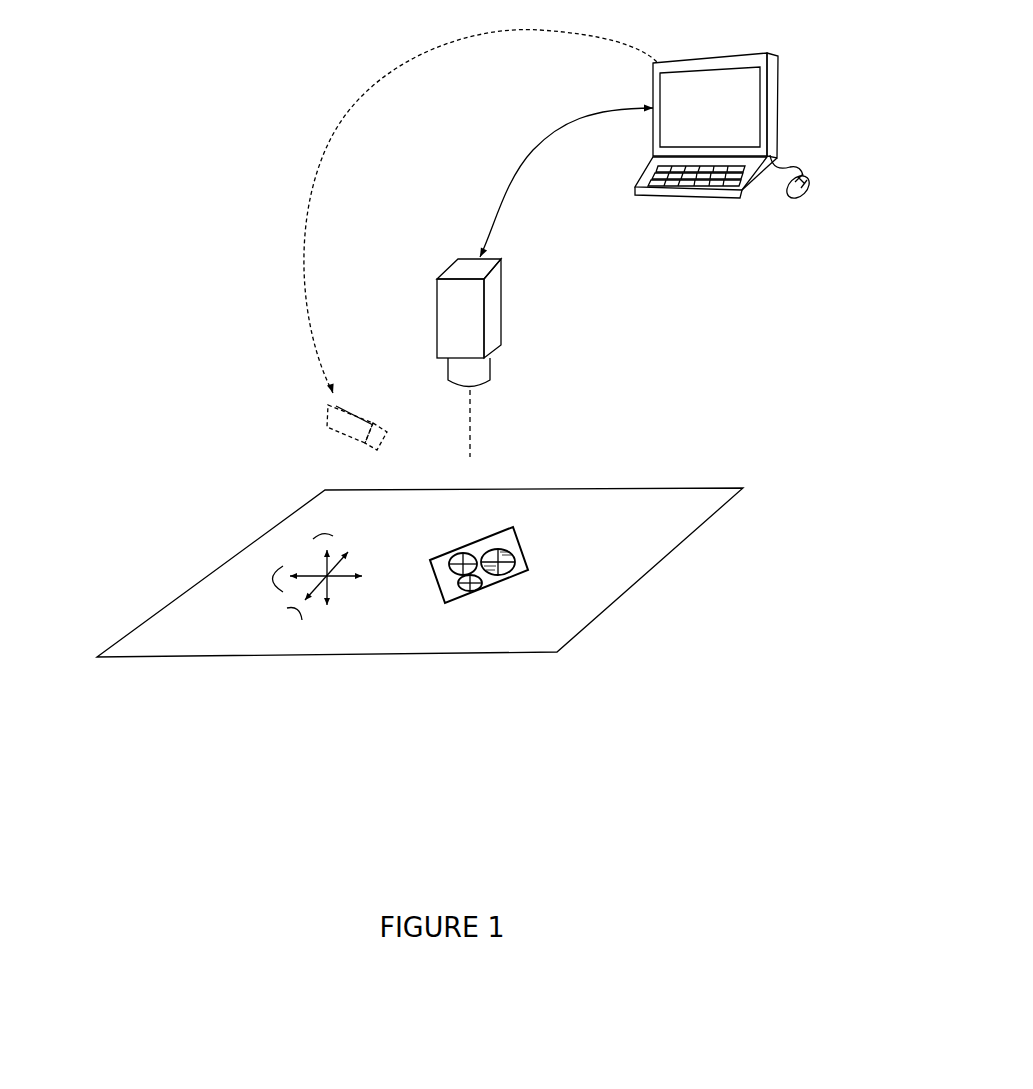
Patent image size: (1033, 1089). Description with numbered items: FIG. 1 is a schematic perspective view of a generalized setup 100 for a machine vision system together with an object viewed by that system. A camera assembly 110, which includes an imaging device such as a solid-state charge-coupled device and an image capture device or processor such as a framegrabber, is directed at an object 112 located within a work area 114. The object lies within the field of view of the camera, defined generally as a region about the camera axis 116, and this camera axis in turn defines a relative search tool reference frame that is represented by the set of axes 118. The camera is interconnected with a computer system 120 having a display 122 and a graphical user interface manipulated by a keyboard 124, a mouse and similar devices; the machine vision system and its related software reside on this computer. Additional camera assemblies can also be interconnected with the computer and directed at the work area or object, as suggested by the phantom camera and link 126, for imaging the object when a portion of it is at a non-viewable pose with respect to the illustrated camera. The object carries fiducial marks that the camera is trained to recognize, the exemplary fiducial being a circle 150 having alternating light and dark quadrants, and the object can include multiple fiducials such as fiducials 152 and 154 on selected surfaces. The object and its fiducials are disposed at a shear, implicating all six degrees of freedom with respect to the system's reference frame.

The generalized setup 100 is at (230, 42).
The camera assembly 110 is at (497, 312).
The object 112 is at (525, 535).
The work area 114 is at (642, 510).
The camera axis 116 is at (470, 428).
The set of axes 118 is at (323, 568).
The computer system 120 is at (778, 107).
The display 122 is at (657, 93).
The keyboard 124 is at (685, 187).
The phantom camera and link 126 is at (325, 418).
The circle fiducial 150 is at (513, 572).
The fiducial 152 is at (470, 593).
The fiducial 154 is at (443, 600).